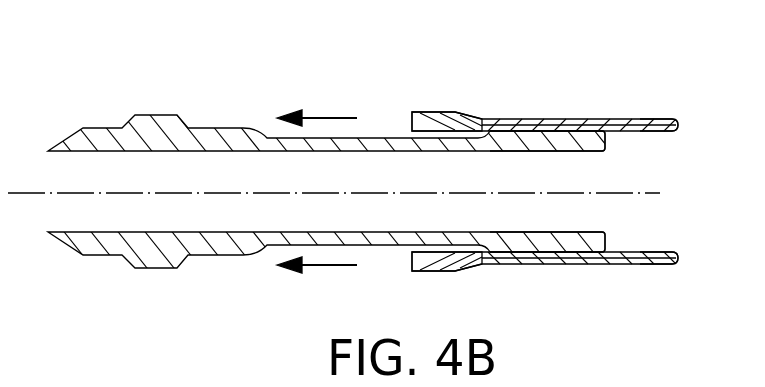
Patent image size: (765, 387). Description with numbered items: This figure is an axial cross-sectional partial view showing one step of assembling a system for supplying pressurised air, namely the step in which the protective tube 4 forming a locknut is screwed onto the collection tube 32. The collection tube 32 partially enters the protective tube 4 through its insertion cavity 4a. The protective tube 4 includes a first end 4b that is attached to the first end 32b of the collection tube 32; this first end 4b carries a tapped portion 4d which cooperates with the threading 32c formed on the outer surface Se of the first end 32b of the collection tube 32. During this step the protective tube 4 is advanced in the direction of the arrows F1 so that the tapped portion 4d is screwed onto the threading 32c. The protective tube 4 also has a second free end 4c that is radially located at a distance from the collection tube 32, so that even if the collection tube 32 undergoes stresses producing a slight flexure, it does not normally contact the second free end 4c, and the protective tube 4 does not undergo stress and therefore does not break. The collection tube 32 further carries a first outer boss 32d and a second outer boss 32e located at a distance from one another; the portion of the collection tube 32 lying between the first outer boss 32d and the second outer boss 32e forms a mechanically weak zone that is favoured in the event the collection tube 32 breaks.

The collection tube 32 is at (147, 113).
The first end of the collection tube 32b is at (598, 140).
The threading 32c is at (557, 253).
The first outer boss 32d is at (532, 142).
The second outer boss 32e is at (210, 243).
The protective tube 4 is at (545, 118).
The insertion cavity 4a is at (411, 249).
The first end of the protective tube 4b is at (662, 118).
The second free end 4c is at (413, 111).
The tapped portion 4d is at (652, 251).
The outer surface Se is at (585, 258).
The arrows F1 is at (320, 116).